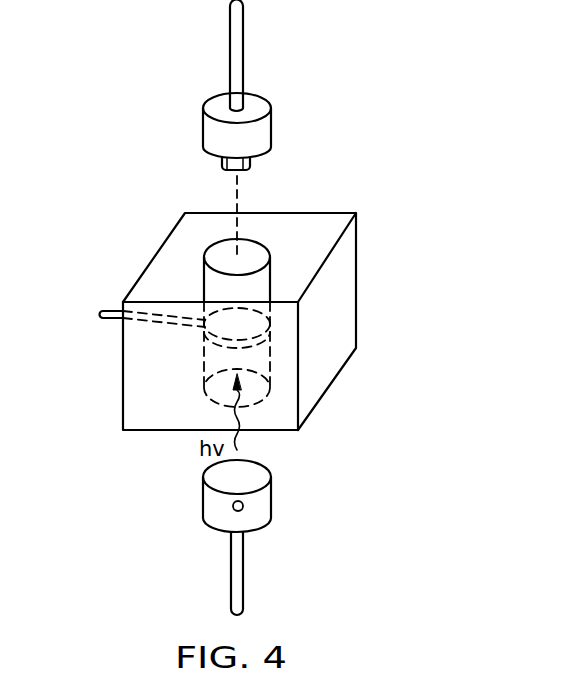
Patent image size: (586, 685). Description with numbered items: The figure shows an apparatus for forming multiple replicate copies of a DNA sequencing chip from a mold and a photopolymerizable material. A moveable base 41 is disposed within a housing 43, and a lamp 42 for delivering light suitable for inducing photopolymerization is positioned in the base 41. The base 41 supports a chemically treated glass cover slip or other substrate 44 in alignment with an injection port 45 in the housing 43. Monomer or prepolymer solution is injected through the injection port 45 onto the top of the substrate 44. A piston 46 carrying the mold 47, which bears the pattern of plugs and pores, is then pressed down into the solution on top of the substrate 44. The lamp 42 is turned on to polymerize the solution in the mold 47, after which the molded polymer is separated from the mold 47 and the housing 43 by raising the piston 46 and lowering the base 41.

The moveable base 41 is at (262, 503).
The lamp 42 is at (233, 507).
The housing 43 is at (342, 298).
The substrate 44 is at (258, 327).
The injection port 45 is at (101, 312).
The piston 46 is at (259, 134).
The mold 47 is at (222, 163).